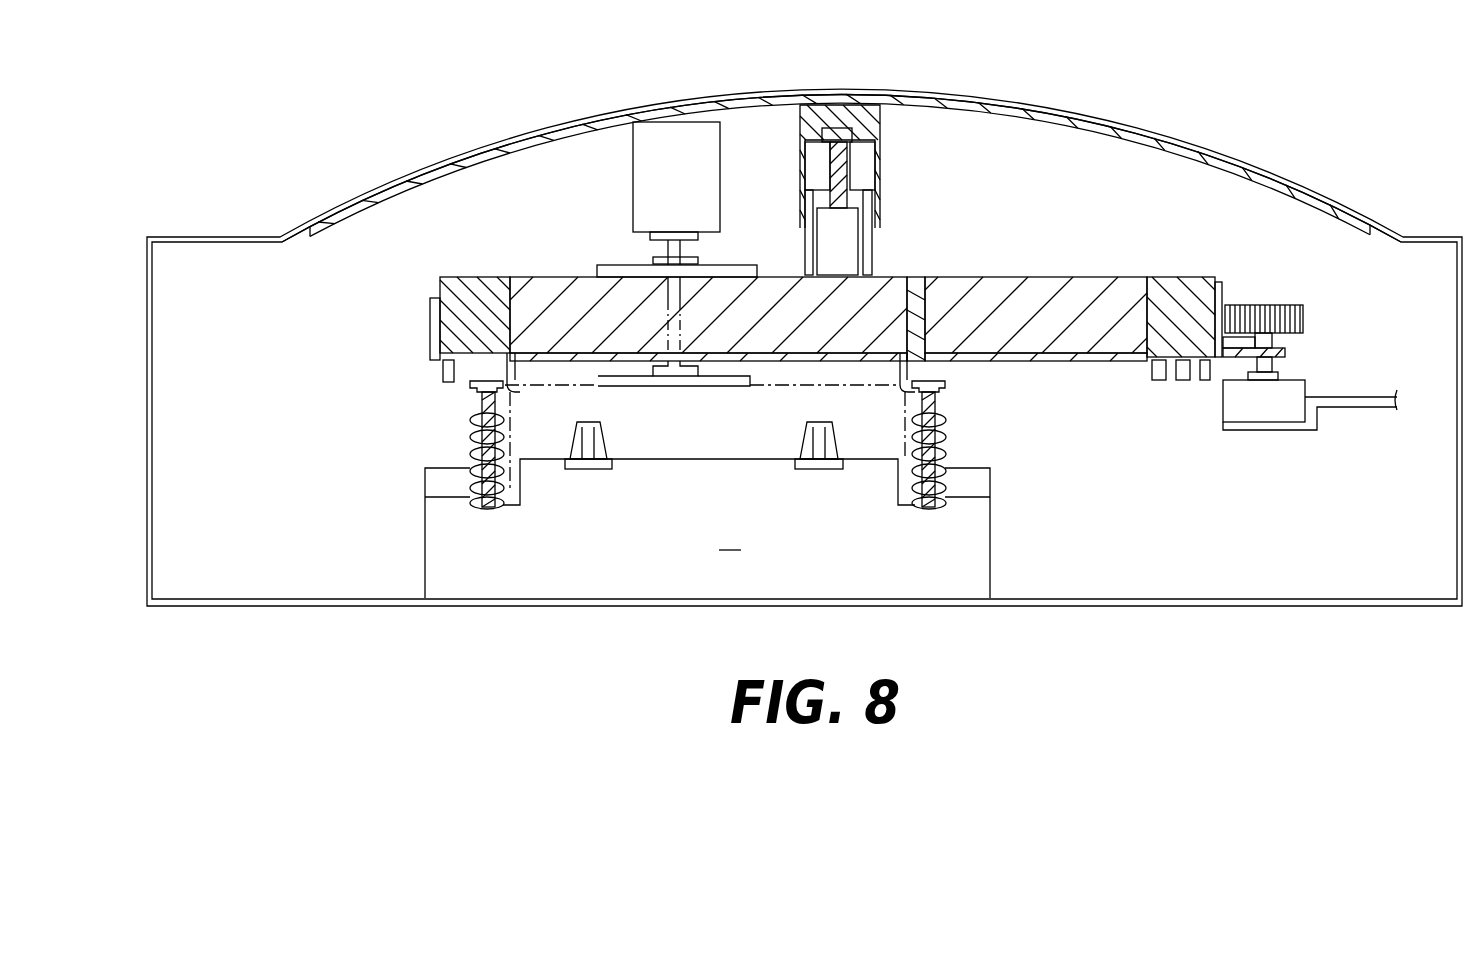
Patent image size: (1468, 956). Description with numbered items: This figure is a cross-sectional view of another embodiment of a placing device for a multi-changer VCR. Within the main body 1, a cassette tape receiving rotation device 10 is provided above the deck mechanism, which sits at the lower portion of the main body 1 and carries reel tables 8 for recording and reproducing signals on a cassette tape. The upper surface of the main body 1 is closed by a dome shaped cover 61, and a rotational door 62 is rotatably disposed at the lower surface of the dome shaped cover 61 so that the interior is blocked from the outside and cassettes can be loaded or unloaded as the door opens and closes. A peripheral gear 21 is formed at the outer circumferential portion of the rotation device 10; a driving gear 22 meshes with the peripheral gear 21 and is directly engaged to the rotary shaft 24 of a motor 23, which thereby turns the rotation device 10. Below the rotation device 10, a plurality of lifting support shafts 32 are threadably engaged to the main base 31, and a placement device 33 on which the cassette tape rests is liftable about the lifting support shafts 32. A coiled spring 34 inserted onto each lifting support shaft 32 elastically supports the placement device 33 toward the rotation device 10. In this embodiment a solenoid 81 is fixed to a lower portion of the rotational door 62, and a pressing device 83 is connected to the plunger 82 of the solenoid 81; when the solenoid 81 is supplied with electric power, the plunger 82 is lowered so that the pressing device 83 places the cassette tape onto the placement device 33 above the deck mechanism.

The multi-VCR main body 1 is at (150, 237).
The dome shaped cover 61 is at (1099, 112).
The rotational door 62 is at (1140, 150).
The solenoid 81 is at (653, 135).
The plunger 82 is at (668, 250).
The pressing device 83 is at (597, 265).
The cassette tape receiving rotation device 10 is at (440, 277).
The placement device 33 is at (713, 362).
The peripheral gear 21 is at (1220, 285).
The driving gear 22 is at (1303, 318).
The rotary shaft 24 is at (1285, 365).
The motor 23 is at (1237, 418).
The main base 31 is at (975, 533).
The reel table 8 is at (588, 455).
The lifting support shaft 32 is at (935, 418).
The coiled spring 34 is at (945, 445).